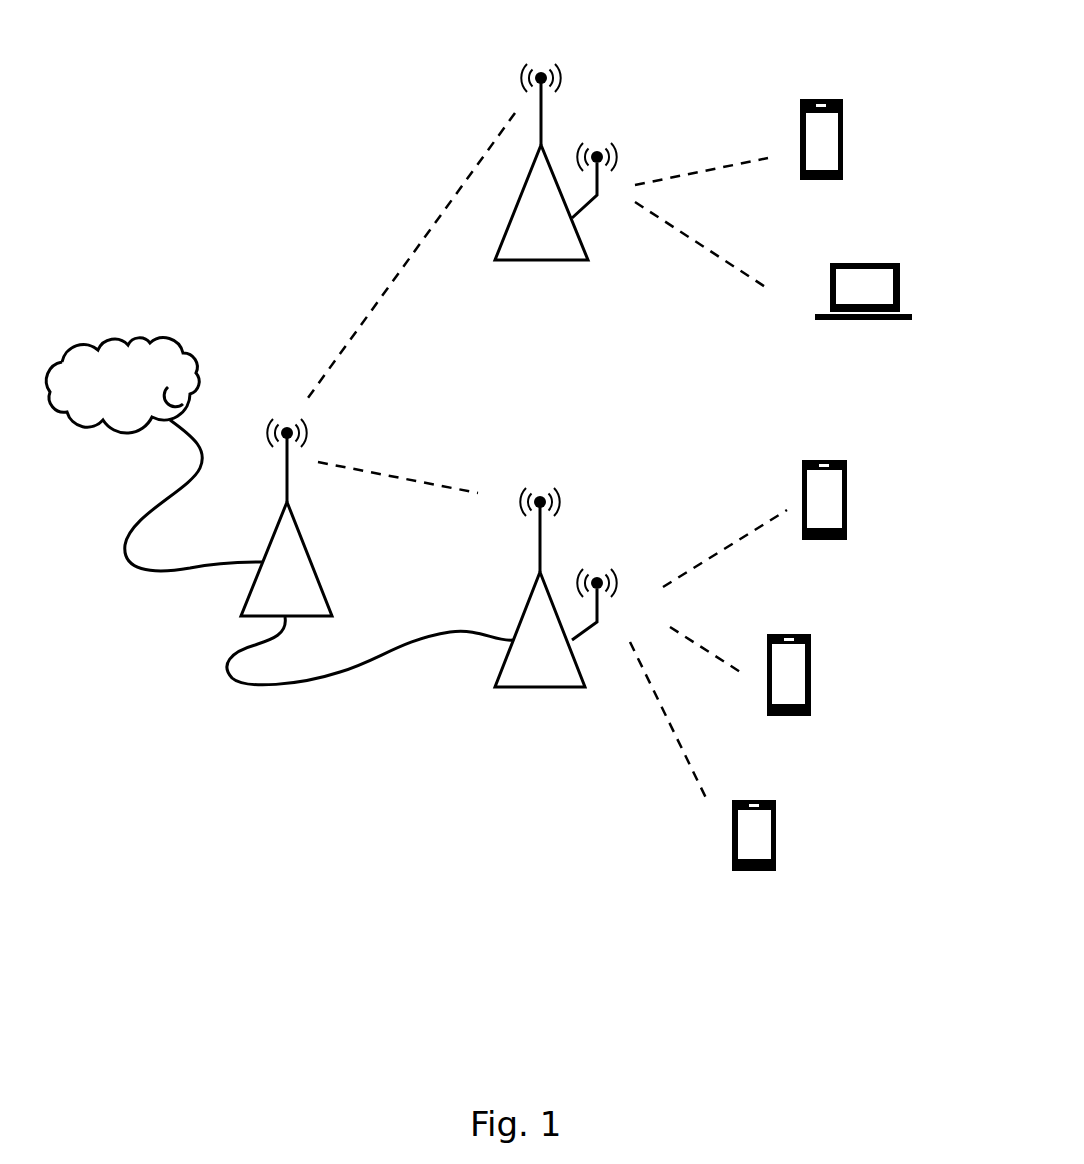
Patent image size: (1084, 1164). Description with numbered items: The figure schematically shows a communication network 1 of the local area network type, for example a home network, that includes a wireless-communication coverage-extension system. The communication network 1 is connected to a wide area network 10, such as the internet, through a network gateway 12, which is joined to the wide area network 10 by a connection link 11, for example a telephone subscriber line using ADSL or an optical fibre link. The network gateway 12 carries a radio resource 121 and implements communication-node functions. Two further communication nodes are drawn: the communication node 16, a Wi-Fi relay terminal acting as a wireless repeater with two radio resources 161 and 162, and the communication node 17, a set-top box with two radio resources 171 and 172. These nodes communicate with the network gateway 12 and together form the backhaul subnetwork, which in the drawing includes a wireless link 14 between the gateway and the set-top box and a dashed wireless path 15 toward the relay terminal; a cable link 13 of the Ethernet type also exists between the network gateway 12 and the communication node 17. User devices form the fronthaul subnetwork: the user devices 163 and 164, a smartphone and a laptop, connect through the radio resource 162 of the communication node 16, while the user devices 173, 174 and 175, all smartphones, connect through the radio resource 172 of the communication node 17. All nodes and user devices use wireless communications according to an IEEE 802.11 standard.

The communication network 1 is at (262, 100).
The wide area network 10 is at (138, 332).
The connection link 11 is at (142, 573).
The network gateway 12 is at (335, 512).
The radio resource 121 is at (320, 440).
The cable link 13 is at (325, 690).
The wireless link 14 is at (430, 470).
The wireless backhaul link 15 is at (408, 250).
The communication node 16 is at (610, 170).
The radio resource 161 is at (587, 65).
The radio resource 162 is at (640, 155).
The user device 163 is at (843, 152).
The user device 164 is at (877, 263).
The communication node 17 is at (601, 589).
The radio resource 171 is at (555, 465).
The radio resource 172 is at (628, 567).
The user device 173 is at (846, 500).
The user device 174 is at (810, 690).
The user device 175 is at (776, 840).